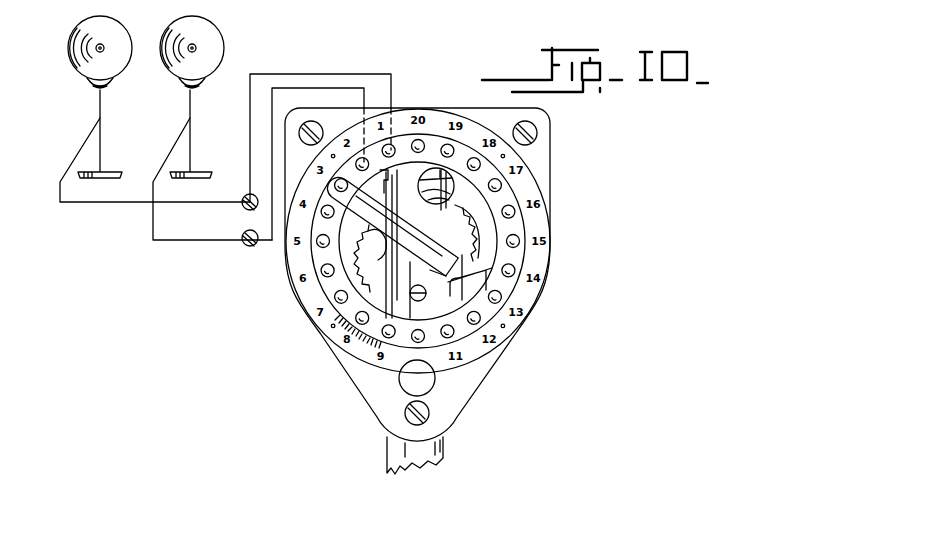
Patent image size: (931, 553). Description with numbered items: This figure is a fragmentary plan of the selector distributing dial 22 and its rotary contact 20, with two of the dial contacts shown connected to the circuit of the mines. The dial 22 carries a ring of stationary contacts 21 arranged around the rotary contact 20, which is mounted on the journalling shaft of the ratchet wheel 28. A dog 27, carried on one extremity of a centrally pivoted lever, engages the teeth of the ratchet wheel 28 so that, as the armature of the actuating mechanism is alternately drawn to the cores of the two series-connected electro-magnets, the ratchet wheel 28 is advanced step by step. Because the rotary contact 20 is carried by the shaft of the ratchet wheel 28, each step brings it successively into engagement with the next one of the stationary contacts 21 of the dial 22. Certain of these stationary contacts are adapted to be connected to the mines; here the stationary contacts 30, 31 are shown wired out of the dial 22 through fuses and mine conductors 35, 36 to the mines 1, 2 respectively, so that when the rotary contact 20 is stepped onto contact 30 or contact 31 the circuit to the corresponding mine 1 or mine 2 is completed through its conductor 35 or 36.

The mine 1 is at (101, 97).
The mine 2 is at (192, 97).
The rotary contact 20 is at (378, 284).
The stationary contacts 21 is at (388, 336).
The selector distributing dial 22 is at (526, 318).
The dog 27 is at (425, 183).
The ratchet wheel 28 is at (408, 246).
The stationary contact 30 is at (243, 198).
The stationary contact 31 is at (243, 234).
The mine conductor 35 is at (120, 204).
The mine conductor 36 is at (206, 242).